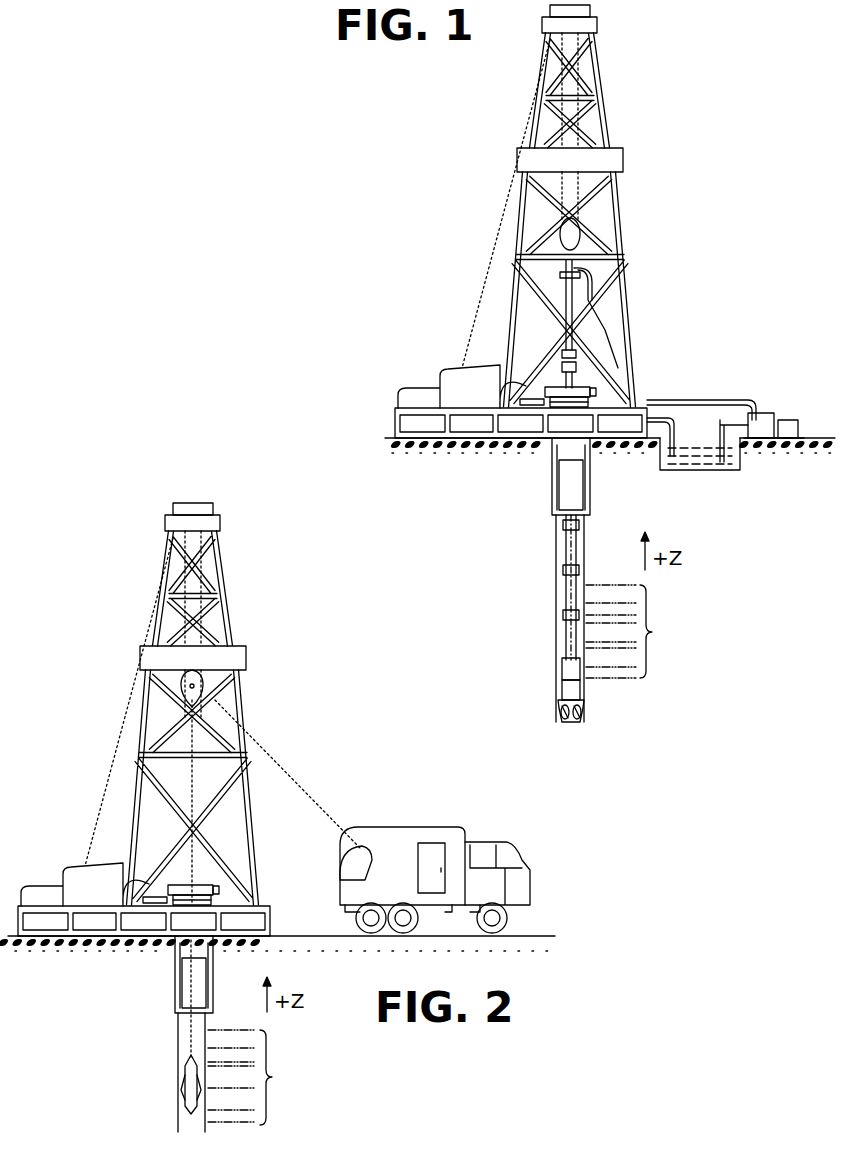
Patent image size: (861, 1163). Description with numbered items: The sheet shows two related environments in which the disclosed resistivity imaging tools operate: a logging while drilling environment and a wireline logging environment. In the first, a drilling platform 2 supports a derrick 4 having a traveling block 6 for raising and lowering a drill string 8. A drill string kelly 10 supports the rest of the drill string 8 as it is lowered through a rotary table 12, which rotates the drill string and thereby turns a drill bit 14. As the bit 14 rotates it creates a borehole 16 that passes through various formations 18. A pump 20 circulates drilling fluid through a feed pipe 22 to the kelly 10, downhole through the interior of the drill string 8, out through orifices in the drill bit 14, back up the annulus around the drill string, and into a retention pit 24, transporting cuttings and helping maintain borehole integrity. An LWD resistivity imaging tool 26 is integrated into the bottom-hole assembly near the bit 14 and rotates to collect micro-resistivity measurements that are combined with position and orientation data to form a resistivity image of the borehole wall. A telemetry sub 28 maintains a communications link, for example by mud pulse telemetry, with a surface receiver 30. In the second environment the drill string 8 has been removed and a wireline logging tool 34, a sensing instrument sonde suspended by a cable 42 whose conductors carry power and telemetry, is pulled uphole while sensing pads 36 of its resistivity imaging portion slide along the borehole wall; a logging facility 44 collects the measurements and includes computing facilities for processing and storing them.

In FIG. 1, the drilling platform 2 is at (395, 413).
In FIG. 2, the drilling platform 2 is at (269, 919).
In FIG. 1, the derrick 4 is at (605, 119).
In FIG. 2, the derrick 4 is at (258, 872).
In FIG. 1, the traveling block 6 is at (582, 231).
In FIG. 2, the traveling block 6 is at (203, 685).
In FIG. 1, the drill string 8 is at (573, 553).
In FIG. 1, the drill string kelly 10 is at (569, 294).
In FIG. 1, the rotary table 12 is at (583, 384).
In FIG. 2, the rotary table 12 is at (210, 884).
In FIG. 1, the drill bit 14 is at (578, 720).
In FIG. 1, the borehole 16 is at (582, 562).
In FIG. 1, the formations 18 is at (634, 631).
In FIG. 2, the formations 18 is at (256, 1077).
In FIG. 1, the pump 20 is at (763, 418).
In FIG. 1, the feed pipe 22 is at (710, 400).
In FIG. 1, the retention pit 24 is at (672, 460).
In FIG. 1, the LWD resistivity imaging tool 26 is at (563, 688).
In FIG. 1, the telemetry sub 28 is at (564, 671).
In FIG. 1, the surface receiver 30 is at (577, 351).
In FIG. 2, the wireline logging tool 34 is at (189, 1078).
In FIG. 2, the sensing pads 36 is at (182, 1095).
In FIG. 2, the cable 42 is at (257, 754).
In FIG. 2, the logging facility 44 is at (398, 829).